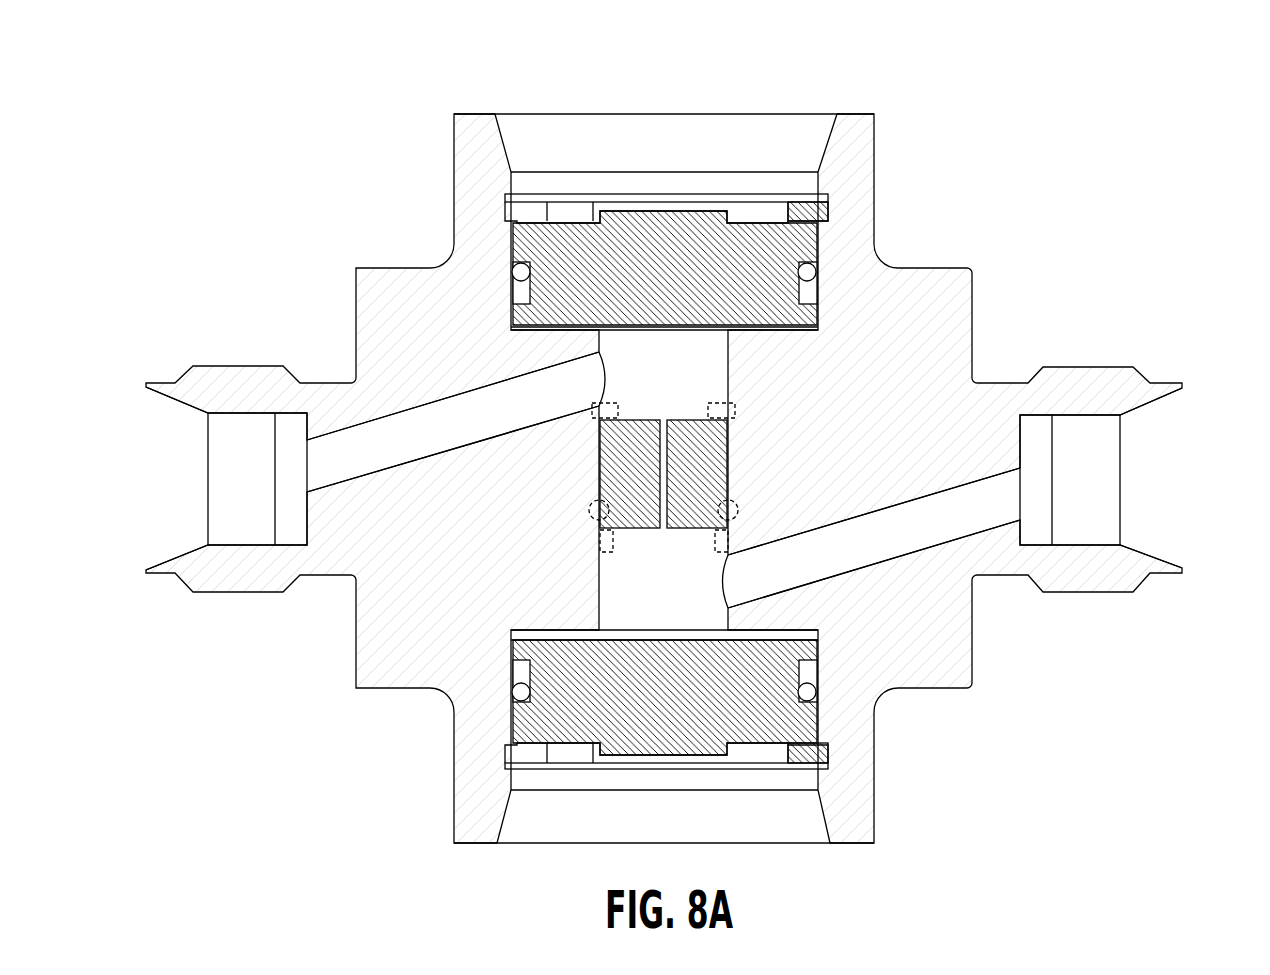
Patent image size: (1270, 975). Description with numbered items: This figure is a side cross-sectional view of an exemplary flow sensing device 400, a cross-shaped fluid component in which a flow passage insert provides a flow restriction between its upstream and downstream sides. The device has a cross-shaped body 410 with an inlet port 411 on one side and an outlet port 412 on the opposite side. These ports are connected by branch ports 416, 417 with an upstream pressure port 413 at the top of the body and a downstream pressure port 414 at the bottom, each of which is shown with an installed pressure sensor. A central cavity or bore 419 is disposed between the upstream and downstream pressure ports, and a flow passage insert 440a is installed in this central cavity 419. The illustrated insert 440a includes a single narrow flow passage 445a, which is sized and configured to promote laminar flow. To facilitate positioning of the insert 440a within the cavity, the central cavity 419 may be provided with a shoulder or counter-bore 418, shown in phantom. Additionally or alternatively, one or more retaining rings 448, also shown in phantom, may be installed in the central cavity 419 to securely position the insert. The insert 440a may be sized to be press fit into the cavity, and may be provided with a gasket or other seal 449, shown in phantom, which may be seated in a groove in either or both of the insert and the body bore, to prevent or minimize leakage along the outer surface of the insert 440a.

The flow sensing device 400 is at (1016, 77).
The cross-shaped body 410 is at (393, 623).
The inlet port 411 is at (177, 397).
The outlet port 412 is at (1133, 417).
The upstream pressure port 413 is at (519, 134).
The downstream pressure port 414 is at (529, 820).
The branch port 416 is at (437, 452).
The branch port 417 is at (927, 495).
The shoulder or counter-bore 418 is at (730, 540).
The central cavity or bore 419 is at (685, 392).
The flow passage insert 440a is at (717, 457).
The single narrow flow passage 445a is at (667, 510).
The retaining ring 448 is at (728, 403).
The gasket or seal 449 is at (730, 502).